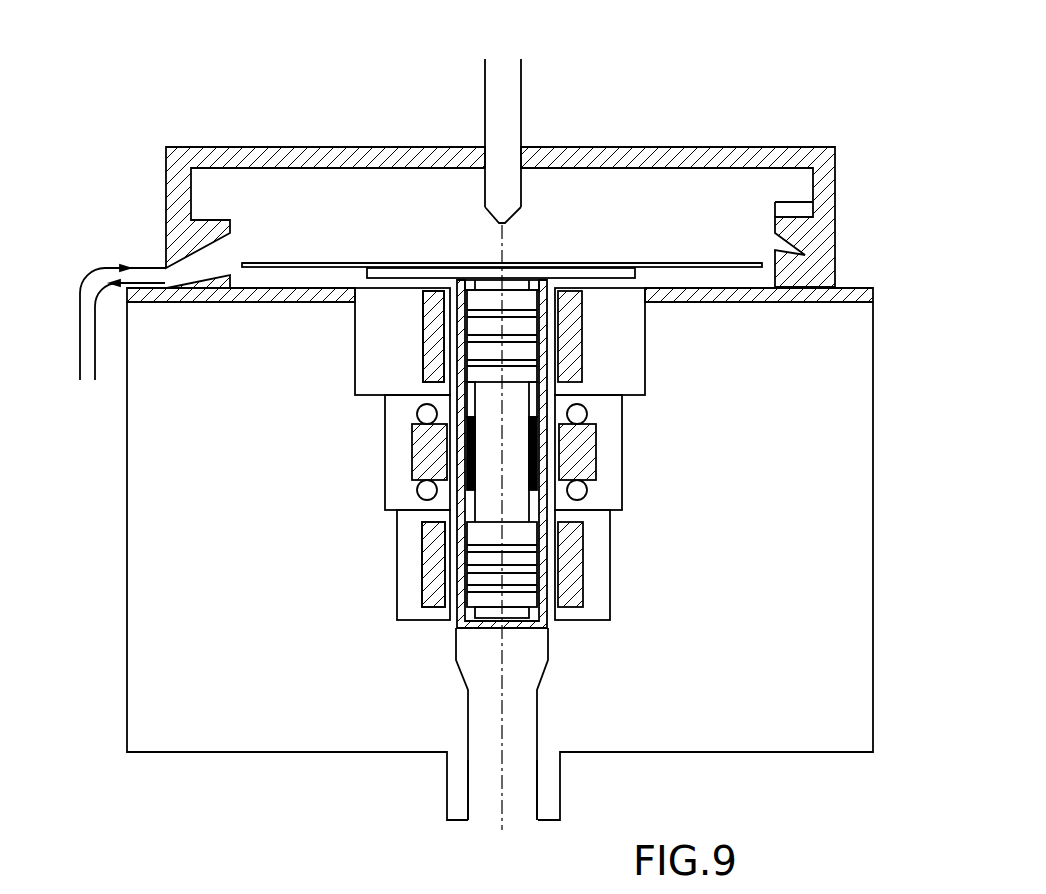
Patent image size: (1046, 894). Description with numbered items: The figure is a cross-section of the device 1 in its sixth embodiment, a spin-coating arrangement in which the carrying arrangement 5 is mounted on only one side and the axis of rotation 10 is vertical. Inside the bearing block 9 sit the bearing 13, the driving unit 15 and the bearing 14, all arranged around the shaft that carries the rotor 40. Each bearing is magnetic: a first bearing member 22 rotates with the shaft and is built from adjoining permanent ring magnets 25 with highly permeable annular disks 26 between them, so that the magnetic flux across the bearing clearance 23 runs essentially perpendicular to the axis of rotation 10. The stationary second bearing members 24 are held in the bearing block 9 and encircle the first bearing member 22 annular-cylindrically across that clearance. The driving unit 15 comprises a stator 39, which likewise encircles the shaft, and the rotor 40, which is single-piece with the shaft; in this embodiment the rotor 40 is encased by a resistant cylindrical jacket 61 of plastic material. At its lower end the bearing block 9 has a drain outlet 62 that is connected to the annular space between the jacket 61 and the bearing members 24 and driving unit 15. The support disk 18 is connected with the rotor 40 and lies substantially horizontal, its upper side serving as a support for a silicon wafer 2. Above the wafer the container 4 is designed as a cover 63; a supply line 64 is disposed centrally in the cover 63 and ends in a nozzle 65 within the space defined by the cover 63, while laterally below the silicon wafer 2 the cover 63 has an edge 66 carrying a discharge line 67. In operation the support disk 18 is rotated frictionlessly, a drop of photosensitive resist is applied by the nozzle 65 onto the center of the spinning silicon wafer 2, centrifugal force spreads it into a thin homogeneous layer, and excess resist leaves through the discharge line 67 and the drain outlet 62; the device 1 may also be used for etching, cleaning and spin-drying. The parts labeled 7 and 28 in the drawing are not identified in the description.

The device 1 is at (290, 140).
The silicon wafer 2 is at (716, 263).
The container 4 is at (684, 145).
The carrying arrangement 5 is at (340, 260).
The housing top wall 7 is at (247, 298).
The bearing block 9 is at (272, 754).
The axis of rotation 10 is at (502, 727).
The bearing 13 is at (585, 343).
The bearing 14 is at (587, 563).
The driving unit 15 is at (600, 467).
The support disk 18 is at (597, 276).
The first bearing member 22 is at (522, 326).
The bearing clearance 23 is at (560, 365).
The second bearing member 24 is at (440, 321).
The permanent ring magnet 25 is at (483, 535).
The annular disk 26 is at (520, 540).
The coil 28 is at (440, 360).
The stator 39 is at (425, 470).
The rotor 40 is at (490, 444).
The cylindrical jacket 61 is at (468, 626).
The drain outlet 62 is at (487, 793).
The cover 63 is at (780, 155).
The supply line 64 is at (498, 90).
The nozzle 65 is at (497, 224).
The edge 66 is at (183, 198).
The discharge line 67 is at (92, 285).